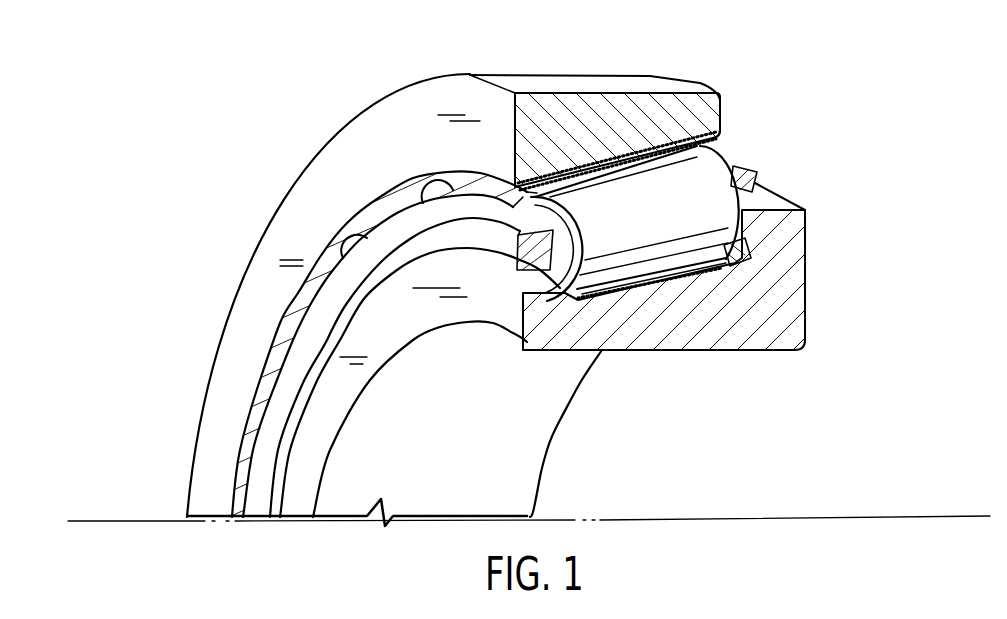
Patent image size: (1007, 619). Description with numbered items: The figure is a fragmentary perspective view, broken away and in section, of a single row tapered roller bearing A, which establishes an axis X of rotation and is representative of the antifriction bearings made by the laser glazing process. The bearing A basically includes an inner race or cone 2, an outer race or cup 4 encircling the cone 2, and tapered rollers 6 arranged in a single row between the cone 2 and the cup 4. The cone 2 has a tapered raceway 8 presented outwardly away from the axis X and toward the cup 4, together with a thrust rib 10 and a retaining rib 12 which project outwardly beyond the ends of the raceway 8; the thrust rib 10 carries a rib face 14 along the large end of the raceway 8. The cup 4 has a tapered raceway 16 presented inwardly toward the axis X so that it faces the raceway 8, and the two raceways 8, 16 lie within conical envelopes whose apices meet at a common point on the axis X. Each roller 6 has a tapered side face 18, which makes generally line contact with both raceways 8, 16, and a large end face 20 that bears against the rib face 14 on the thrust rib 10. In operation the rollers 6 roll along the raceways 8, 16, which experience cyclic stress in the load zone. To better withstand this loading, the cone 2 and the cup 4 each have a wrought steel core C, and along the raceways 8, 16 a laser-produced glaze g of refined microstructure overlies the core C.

The cone 2 is at (815, 326).
The cup 4 is at (548, 72).
The tapered rollers 6 is at (712, 176).
The tapered raceway 8 is at (625, 190).
The thrust rib 10 is at (783, 222).
The retaining rib 12 is at (523, 298).
The rib face 14 is at (773, 250).
The tapered raceway 16 is at (690, 258).
The tapered side face 18 is at (653, 228).
The large end face 20 is at (756, 182).
The tapered roller bearing A is at (240, 178).
The core C is at (600, 125).
The glaze g is at (700, 128).
The axis X is at (509, 520).